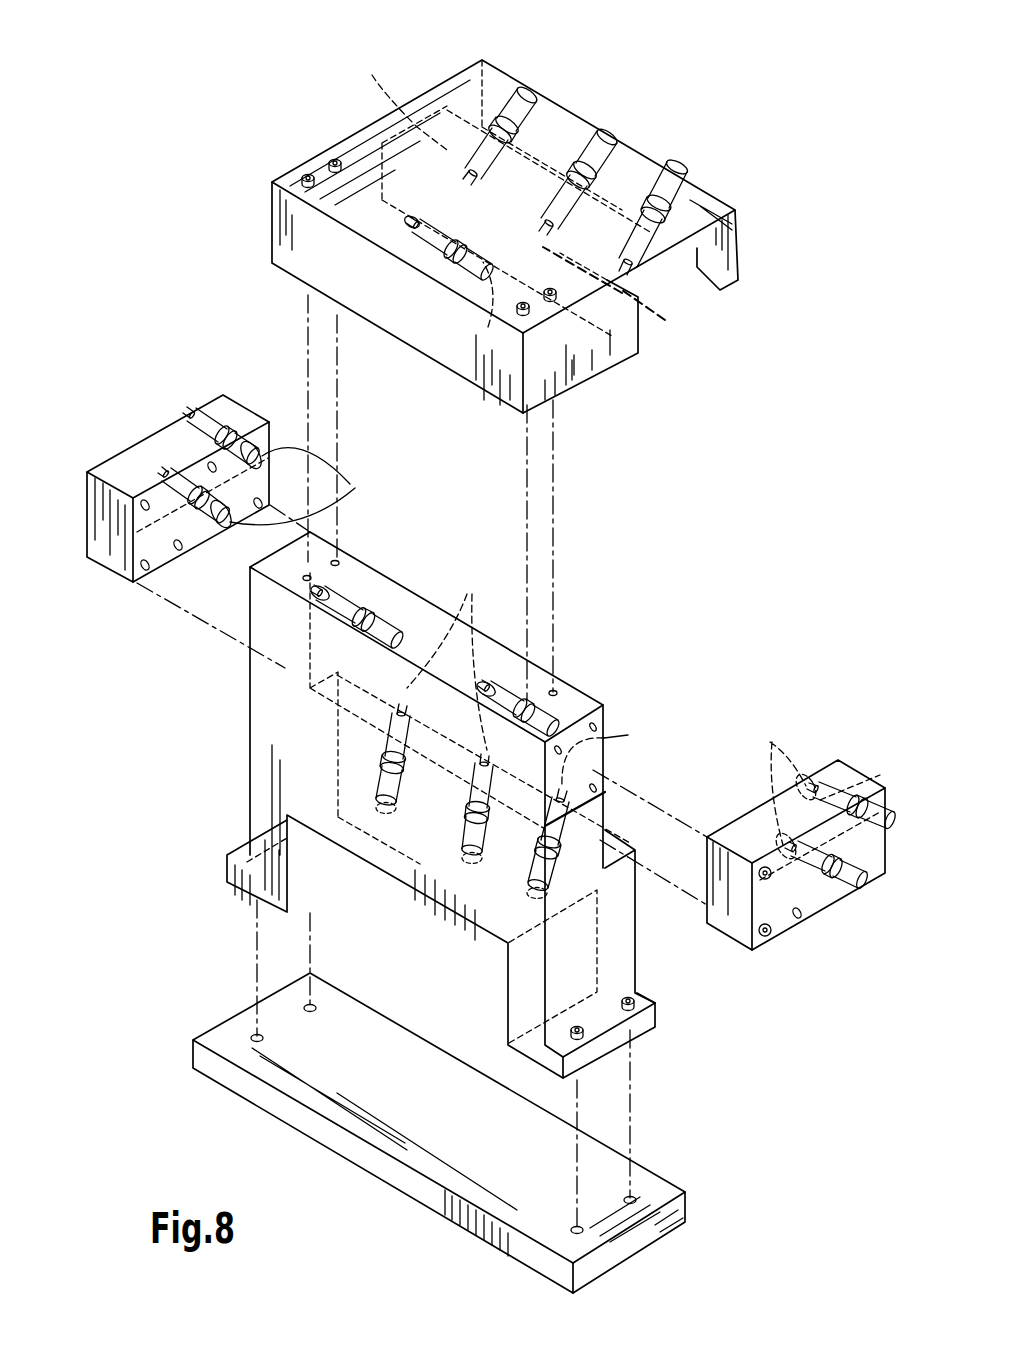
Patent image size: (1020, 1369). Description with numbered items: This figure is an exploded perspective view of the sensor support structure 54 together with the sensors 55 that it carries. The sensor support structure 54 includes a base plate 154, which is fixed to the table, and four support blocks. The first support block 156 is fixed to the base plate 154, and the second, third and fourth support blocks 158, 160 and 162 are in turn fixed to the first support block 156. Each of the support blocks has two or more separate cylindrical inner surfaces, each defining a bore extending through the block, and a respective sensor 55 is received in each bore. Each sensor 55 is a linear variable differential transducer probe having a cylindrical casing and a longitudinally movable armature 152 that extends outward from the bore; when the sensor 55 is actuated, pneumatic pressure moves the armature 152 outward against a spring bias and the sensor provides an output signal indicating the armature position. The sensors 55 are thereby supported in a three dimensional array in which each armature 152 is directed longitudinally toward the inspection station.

The sensor support structure 54 is at (171, 709).
The sensor 55 is at (496, 78).
The armature 152 is at (518, 449).
The base plate 154 is at (232, 1042).
The first support block 156 is at (262, 772).
The second support block 158 is at (372, 138).
The third support block 160 is at (750, 830).
The fourth support block 162 is at (118, 470).